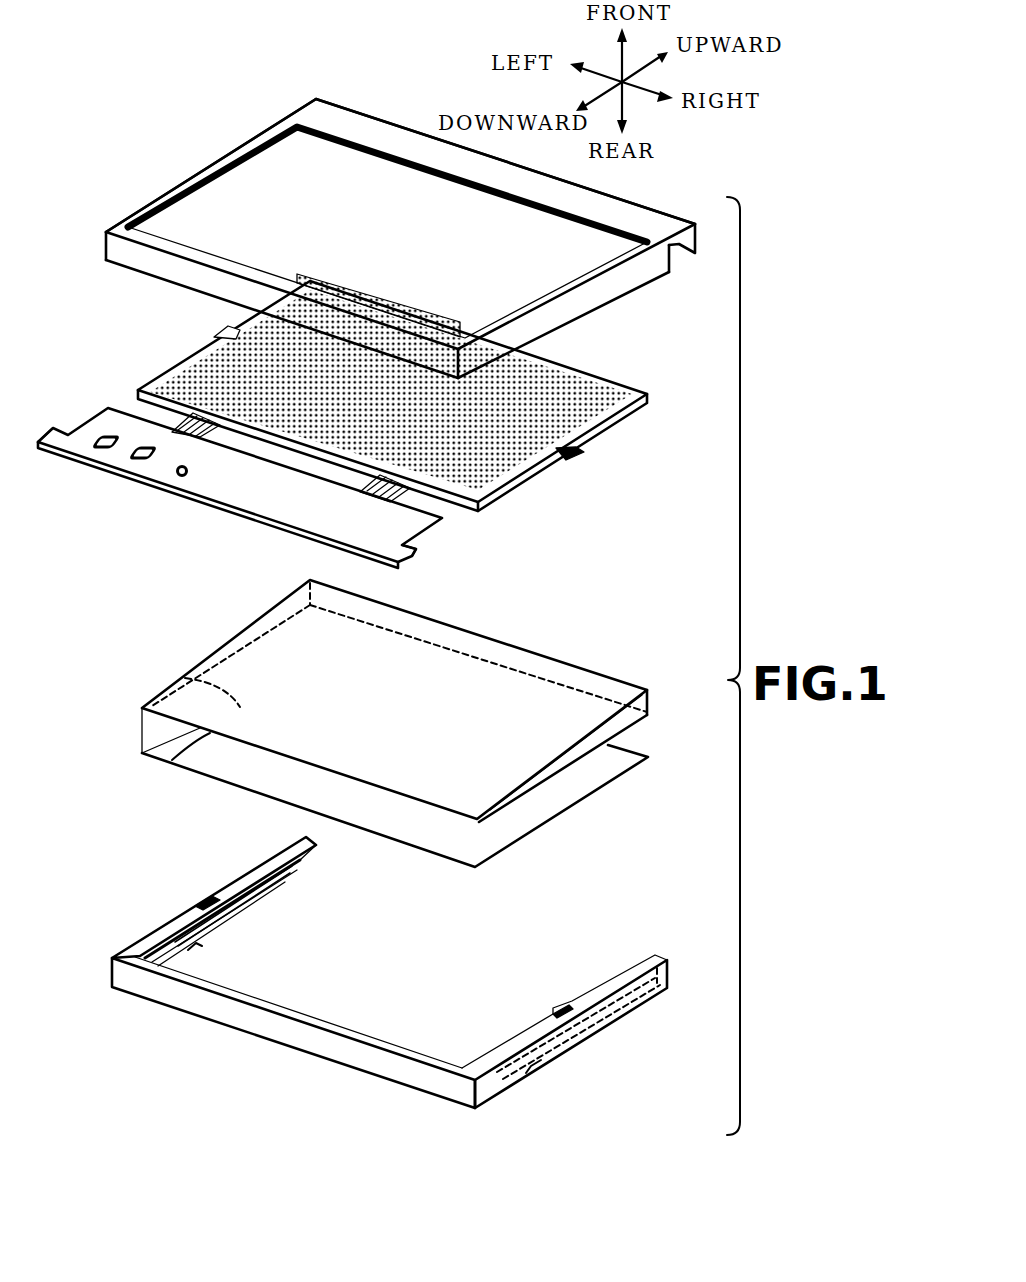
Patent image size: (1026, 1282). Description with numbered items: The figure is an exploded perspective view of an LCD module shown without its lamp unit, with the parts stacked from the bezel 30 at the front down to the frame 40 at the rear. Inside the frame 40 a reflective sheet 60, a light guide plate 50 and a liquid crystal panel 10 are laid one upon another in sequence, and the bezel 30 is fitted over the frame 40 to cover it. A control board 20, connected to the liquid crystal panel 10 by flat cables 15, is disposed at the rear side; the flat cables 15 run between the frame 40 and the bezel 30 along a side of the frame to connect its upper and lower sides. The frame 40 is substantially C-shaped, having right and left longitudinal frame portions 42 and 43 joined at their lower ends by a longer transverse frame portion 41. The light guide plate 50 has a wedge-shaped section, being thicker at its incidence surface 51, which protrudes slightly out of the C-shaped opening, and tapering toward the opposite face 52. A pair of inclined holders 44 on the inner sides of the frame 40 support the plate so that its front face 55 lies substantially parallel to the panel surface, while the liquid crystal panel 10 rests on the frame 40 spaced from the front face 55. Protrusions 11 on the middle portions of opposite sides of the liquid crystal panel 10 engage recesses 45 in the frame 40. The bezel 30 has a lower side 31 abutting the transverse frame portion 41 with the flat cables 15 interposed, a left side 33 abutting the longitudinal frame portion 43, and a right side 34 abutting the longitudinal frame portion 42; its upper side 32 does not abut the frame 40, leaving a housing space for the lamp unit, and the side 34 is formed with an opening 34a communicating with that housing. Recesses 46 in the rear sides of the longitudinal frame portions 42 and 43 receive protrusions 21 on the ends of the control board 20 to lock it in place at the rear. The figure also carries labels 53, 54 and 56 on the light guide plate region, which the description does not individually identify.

The liquid crystal panel 10 is at (414, 400).
The protrusion 11 is at (208, 330).
The flat cable 15 is at (212, 437).
The control board 20 is at (274, 478).
The protrusion 21 is at (53, 430).
The bezel 30 is at (401, 212).
The lower side 31 is at (133, 263).
The upper side 32 is at (383, 133).
The left side 33 is at (187, 178).
The right side 34 is at (570, 325).
The opening 34a is at (677, 256).
The frame 40 is at (404, 970).
The transverse frame portion 41 is at (283, 1030).
The right longitudinal frame portion 42 is at (630, 968).
The left longitudinal frame portion 43 is at (175, 917).
The holder 44 is at (250, 906).
The recess 45 is at (210, 903).
The recess 46 is at (190, 947).
The light guide plate 50 is at (415, 719).
The incidence surface 51 is at (602, 680).
The face opposite to the incidence surface 52 is at (170, 760).
The optical sheet 53 is at (583, 745).
The light source board 54 is at (247, 637).
The front face 55 is at (530, 760).
The light emitting diode 56 is at (193, 680).
The reflective sheet 60 is at (512, 845).